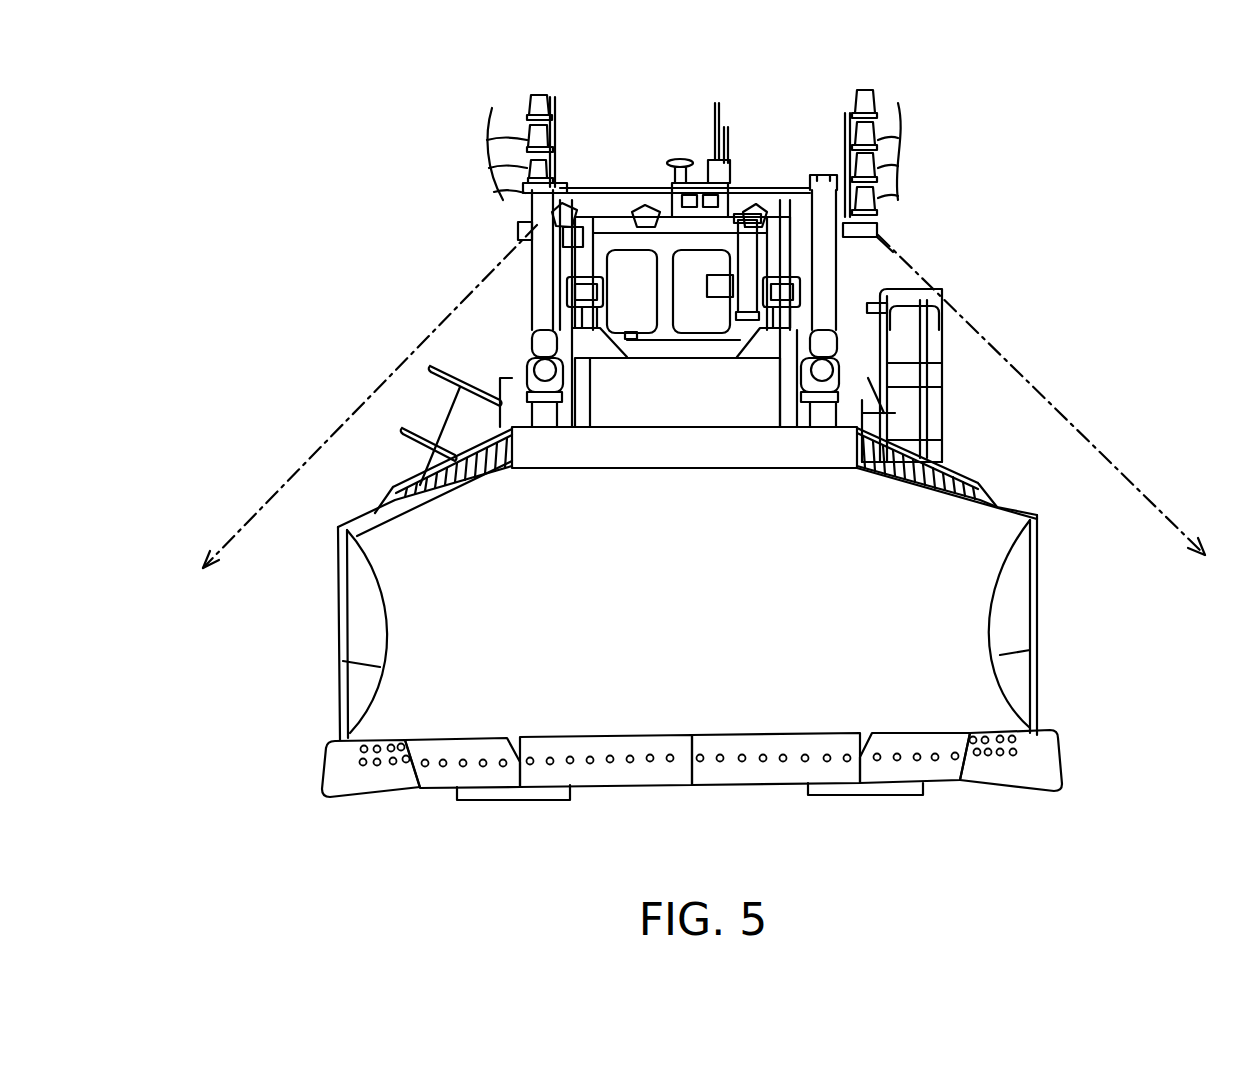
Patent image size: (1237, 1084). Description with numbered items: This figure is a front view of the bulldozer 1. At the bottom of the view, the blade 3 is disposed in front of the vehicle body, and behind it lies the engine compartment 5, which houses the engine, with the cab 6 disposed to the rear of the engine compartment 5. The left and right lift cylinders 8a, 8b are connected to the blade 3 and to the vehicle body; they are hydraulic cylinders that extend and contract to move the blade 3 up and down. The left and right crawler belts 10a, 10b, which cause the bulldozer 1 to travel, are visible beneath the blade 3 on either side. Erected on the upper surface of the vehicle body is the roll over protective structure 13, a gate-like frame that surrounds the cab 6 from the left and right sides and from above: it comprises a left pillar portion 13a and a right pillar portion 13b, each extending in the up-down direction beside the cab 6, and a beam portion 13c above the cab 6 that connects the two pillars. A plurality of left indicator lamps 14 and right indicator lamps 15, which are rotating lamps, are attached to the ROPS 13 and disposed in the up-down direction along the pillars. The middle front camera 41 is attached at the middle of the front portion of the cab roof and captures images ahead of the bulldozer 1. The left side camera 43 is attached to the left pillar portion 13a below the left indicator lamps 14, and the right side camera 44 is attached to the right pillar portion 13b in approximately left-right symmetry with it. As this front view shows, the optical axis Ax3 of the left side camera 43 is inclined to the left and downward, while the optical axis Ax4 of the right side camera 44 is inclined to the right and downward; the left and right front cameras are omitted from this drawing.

The bulldozer 1 is at (1048, 180).
The blade 3 is at (403, 617).
The engine compartment 5 is at (610, 393).
The cab 6 is at (623, 243).
The left lift cylinder 8a is at (827, 307).
The right lift cylinder 8b is at (540, 315).
The left crawler belt 10a is at (925, 785).
The right crawler belt 10b is at (457, 792).
The roll over protective structure (ROPS) 13 is at (749, 163).
The left pillar portion 13a is at (857, 278).
The right pillar portion 13b is at (560, 280).
The beam portion 13c is at (650, 195).
The left indicator lamps 14 is at (870, 103).
The right indicator lamps 15 is at (531, 107).
The middle front camera 41 is at (693, 183).
The left side camera 43 is at (875, 223).
The right side camera 44 is at (527, 228).
The optical axis of the left side camera Ax3 is at (1100, 452).
The optical axis of the right side camera Ax4 is at (298, 470).